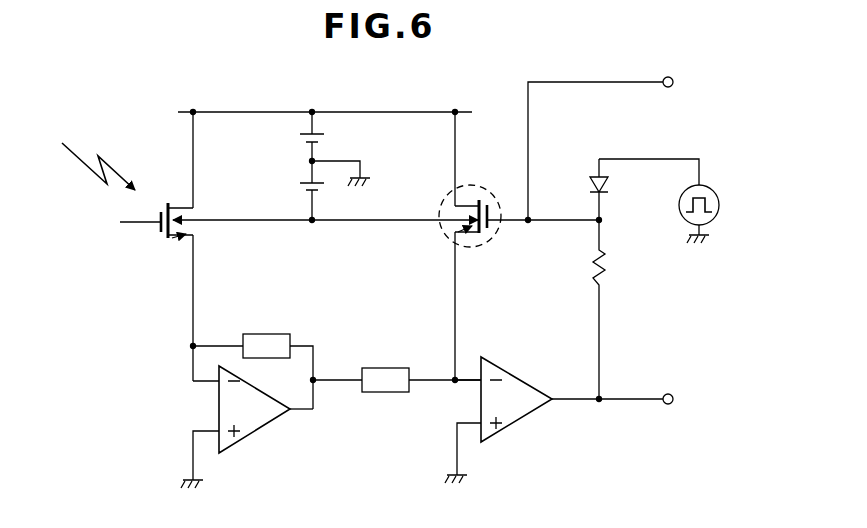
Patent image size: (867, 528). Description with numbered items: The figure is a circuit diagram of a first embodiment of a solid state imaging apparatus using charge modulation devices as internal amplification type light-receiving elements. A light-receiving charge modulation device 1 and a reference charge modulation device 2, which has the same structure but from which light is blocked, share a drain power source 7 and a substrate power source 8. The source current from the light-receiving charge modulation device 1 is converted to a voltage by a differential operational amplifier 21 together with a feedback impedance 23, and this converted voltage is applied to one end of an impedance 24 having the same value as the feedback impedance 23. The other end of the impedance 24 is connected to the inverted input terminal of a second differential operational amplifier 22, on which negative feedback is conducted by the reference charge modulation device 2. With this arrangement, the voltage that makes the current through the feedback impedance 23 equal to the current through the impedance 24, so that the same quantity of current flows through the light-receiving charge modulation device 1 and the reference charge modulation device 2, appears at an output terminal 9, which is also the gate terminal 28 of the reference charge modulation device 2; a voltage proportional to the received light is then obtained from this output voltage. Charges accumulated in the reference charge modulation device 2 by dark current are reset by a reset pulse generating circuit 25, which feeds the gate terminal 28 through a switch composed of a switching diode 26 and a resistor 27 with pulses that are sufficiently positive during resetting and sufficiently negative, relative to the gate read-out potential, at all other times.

The light-receiving charge modulation device 1 is at (164, 242).
The reference charge modulation device 2 is at (477, 247).
The drain power source 7 is at (325, 139).
The substrate power source 8 is at (296, 187).
The output terminal 9 is at (674, 399).
The differential operational amplifier 21 is at (256, 430).
The differential operational amplifier 22 is at (527, 418).
The feedback impedance 23 is at (290, 333).
The impedance 24 is at (386, 368).
The reset pulse generating circuit 25 is at (721, 206).
The switching diode 26 is at (606, 180).
The resistor 27 is at (606, 268).
The gate terminal 28 is at (517, 223).